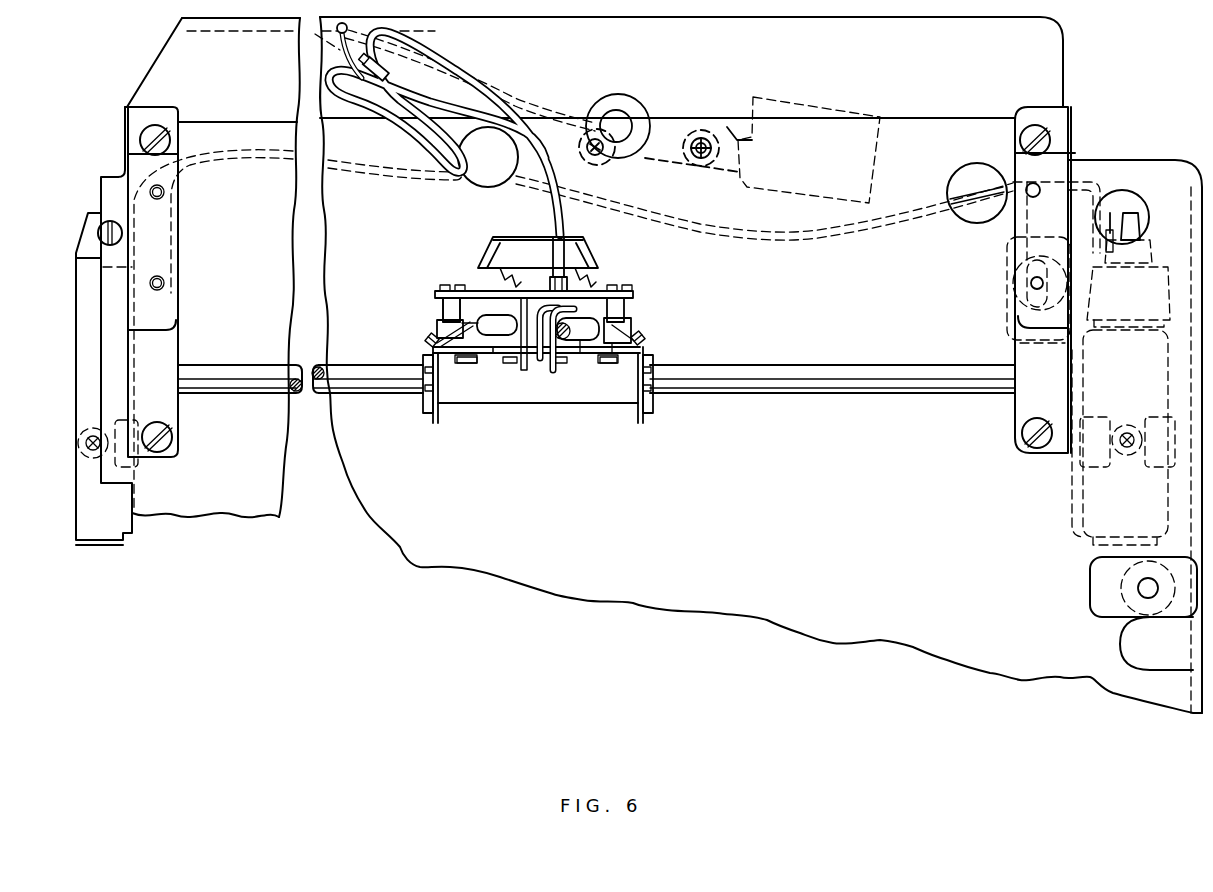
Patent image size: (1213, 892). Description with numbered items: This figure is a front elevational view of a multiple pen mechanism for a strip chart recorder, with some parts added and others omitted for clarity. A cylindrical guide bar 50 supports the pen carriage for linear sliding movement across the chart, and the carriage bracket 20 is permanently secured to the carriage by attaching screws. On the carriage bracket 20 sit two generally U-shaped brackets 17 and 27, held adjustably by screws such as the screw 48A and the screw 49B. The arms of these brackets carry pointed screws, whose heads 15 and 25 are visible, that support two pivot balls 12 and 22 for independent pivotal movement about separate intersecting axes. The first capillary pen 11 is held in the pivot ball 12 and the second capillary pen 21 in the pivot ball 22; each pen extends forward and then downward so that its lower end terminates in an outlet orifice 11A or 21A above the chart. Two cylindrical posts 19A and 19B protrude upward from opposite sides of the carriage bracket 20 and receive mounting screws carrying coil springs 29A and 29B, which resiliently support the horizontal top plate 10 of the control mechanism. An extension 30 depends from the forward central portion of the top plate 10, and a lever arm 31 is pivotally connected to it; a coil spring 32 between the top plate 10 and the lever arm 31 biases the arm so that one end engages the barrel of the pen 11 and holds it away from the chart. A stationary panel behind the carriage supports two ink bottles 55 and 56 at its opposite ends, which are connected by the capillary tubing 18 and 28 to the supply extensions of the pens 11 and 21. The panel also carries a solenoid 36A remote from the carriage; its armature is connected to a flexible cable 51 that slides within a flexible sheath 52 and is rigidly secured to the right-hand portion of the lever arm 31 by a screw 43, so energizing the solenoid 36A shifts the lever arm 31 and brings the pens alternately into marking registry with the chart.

The top plate 10 is at (636, 295).
The capillary pen 11 is at (486, 292).
The outlet orifice 11A is at (530, 360).
The pivot ball 12 is at (476, 292).
The head 15 is at (430, 340).
The U-shaped bracket 17 is at (493, 355).
The capillary tubing 18 is at (273, 156).
The cylindrical post 19A is at (437, 326).
The cylindrical post 19B is at (631, 326).
The carriage bracket 20 is at (514, 358).
The capillary pen 21 is at (603, 267).
The outlet orifice 21A is at (542, 358).
The pivot ball 22 is at (588, 310).
The head 25 is at (642, 339).
The U-shaped bracket 27 is at (580, 348).
The capillary tubing 28 is at (872, 221).
The coil spring 29A is at (443, 318).
The coil spring 29B is at (630, 308).
The extension 30 is at (519, 295).
The lever arm 31 is at (502, 334).
The coil spring 32 is at (521, 296).
The solenoid 36A is at (838, 107).
The screw 43 is at (592, 337).
The screw 48A is at (476, 362).
The screw 49B is at (626, 362).
The cylindrical guide bar 50 is at (248, 389).
The flexible cable 51 is at (612, 355).
The flexible sheath 52 is at (556, 203).
The ink bottle 55 is at (1143, 293).
The ink bottle 56 is at (98, 296).